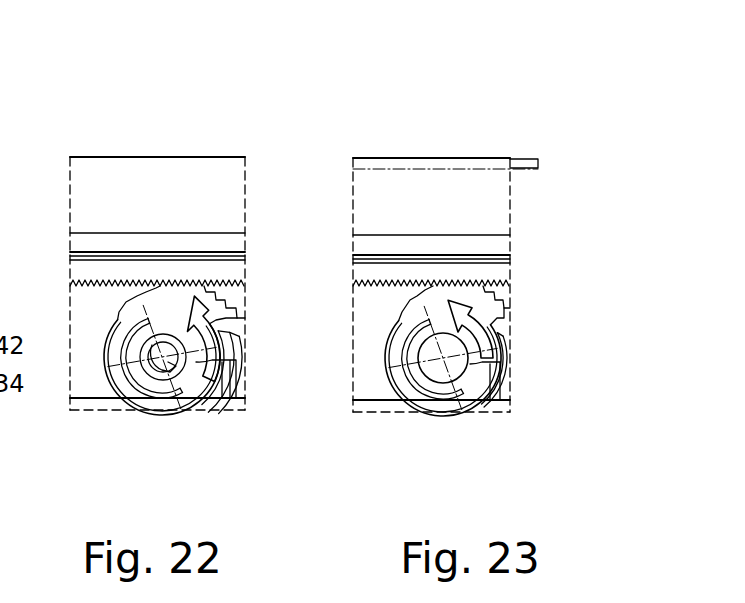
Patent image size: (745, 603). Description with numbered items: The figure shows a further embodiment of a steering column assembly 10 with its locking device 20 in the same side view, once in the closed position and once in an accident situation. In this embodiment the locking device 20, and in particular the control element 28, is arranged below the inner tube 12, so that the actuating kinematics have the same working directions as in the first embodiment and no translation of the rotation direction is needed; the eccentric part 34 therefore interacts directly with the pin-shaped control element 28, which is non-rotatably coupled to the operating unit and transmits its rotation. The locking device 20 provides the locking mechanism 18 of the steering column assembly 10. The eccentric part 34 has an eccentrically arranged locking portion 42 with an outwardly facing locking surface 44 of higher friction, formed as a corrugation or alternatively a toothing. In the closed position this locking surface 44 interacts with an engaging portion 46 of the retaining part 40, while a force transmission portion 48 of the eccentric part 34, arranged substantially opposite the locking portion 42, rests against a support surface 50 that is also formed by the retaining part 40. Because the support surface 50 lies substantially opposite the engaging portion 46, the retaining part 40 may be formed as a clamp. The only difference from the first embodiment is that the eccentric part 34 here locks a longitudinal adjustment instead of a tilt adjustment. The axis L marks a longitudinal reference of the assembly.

In FIG. 22, the steering column assembly 10 is at (73, 143).
In FIG. 23, the steering column assembly 10 is at (345, 138).
In FIG. 22, the inner tube 12 is at (90, 157).
In FIG. 23, the inner tube 12 is at (397, 190).
In FIG. 22, the locking mechanism 18 is at (170, 118).
In FIG. 23, the locking mechanism 18 is at (430, 112).
In FIG. 22, the locking device 20 is at (218, 136).
In FIG. 23, the locking device 20 is at (495, 112).
In FIG. 22, the control element 28 is at (210, 396).
In FIG. 23, the control element 28 is at (485, 400).
In FIG. 22, the eccentric part 34 is at (215, 373).
In FIG. 23, the eccentric part 34 is at (490, 352).
In FIG. 22, the retaining part 40 is at (110, 272).
In FIG. 23, the retaining part 40 is at (380, 268).
In FIG. 22, the locking portion 42 is at (240, 312).
In FIG. 23, the locking portion 42 is at (503, 296).
In FIG. 22, the locking surface 44 is at (218, 282).
In FIG. 23, the locking surface 44 is at (485, 282).
In FIG. 22, the engaging portion 46 is at (92, 284).
In FIG. 23, the engaging portion 46 is at (373, 284).
In FIG. 22, the force transmission portion 48 is at (128, 400).
In FIG. 23, the force transmission portion 48 is at (437, 393).
In FIG. 22, the support surface 50 is at (160, 398).
In FIG. 23, the support surface 50 is at (450, 368).
In FIG. 23, the longitudinal axis L is at (538, 164).